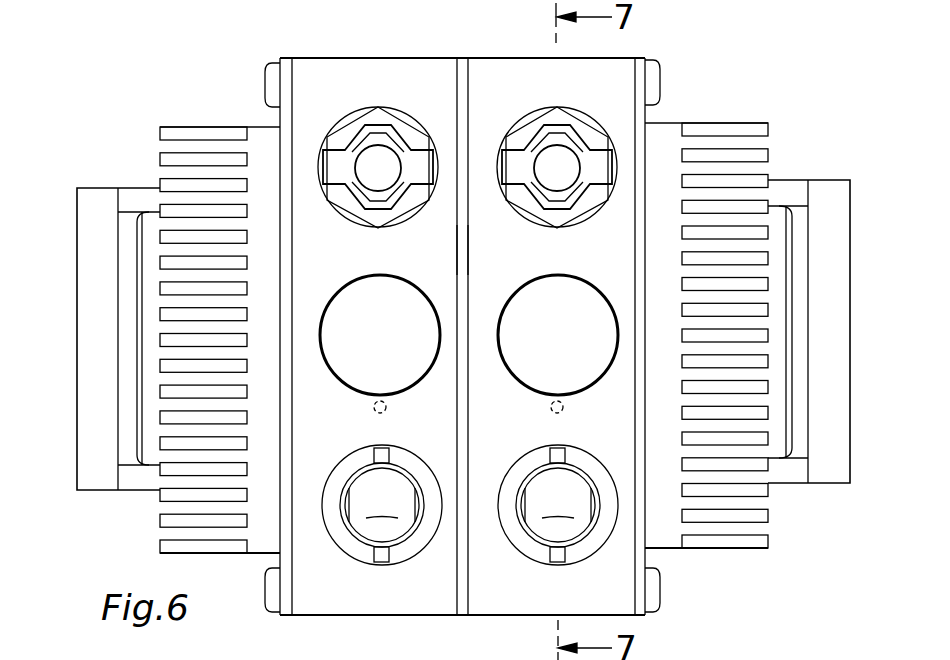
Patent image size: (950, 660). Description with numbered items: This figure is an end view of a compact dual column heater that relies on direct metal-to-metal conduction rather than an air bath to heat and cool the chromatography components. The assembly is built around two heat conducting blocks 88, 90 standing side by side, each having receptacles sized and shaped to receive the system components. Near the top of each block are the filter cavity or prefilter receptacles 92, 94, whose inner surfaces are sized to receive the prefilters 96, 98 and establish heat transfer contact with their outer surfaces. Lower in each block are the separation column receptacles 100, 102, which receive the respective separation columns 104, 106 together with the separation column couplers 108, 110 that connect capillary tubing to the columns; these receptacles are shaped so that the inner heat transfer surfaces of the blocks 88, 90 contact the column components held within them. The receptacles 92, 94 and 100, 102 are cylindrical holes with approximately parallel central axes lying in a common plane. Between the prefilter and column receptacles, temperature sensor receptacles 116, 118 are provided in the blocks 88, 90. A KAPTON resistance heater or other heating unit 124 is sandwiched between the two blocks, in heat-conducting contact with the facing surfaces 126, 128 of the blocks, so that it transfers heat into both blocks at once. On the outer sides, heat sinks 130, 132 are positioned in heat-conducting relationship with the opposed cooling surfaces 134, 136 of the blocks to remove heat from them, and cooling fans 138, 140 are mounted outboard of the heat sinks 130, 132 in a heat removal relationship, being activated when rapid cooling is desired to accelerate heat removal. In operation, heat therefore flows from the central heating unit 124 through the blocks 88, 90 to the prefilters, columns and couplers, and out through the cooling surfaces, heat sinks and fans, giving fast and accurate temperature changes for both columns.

The heat conducting block 88 is at (348, 57).
The heat conducting block 90 is at (540, 57).
The heating unit 124 is at (462, 58).
The prefilter receptacle 92 is at (343, 121).
The prefilter receptacle 94 is at (522, 121).
The prefilter 96 is at (421, 125).
The prefilter 98 is at (599, 125).
The surface of heating block 126 is at (456, 250).
The surface of heating block 128 is at (458, 265).
The heat sink 130 is at (248, 128).
The heat sink 132 is at (683, 123).
The cooling surface 134 is at (283, 296).
The cooling surface 136 is at (644, 266).
The cooling fan 138 is at (77, 364).
The cooling fan 140 is at (850, 364).
The temperature sensor receptacle 116 is at (382, 398).
The temperature sensor receptacle 118 is at (559, 398).
The separation column receptacle 100 is at (428, 438).
The separation column receptacle 102 is at (600, 438).
The separation column coupler 108 is at (339, 462).
The separation column coupler 110 is at (515, 460).
The separation column 104 is at (382, 505).
The separation column 106 is at (558, 505).